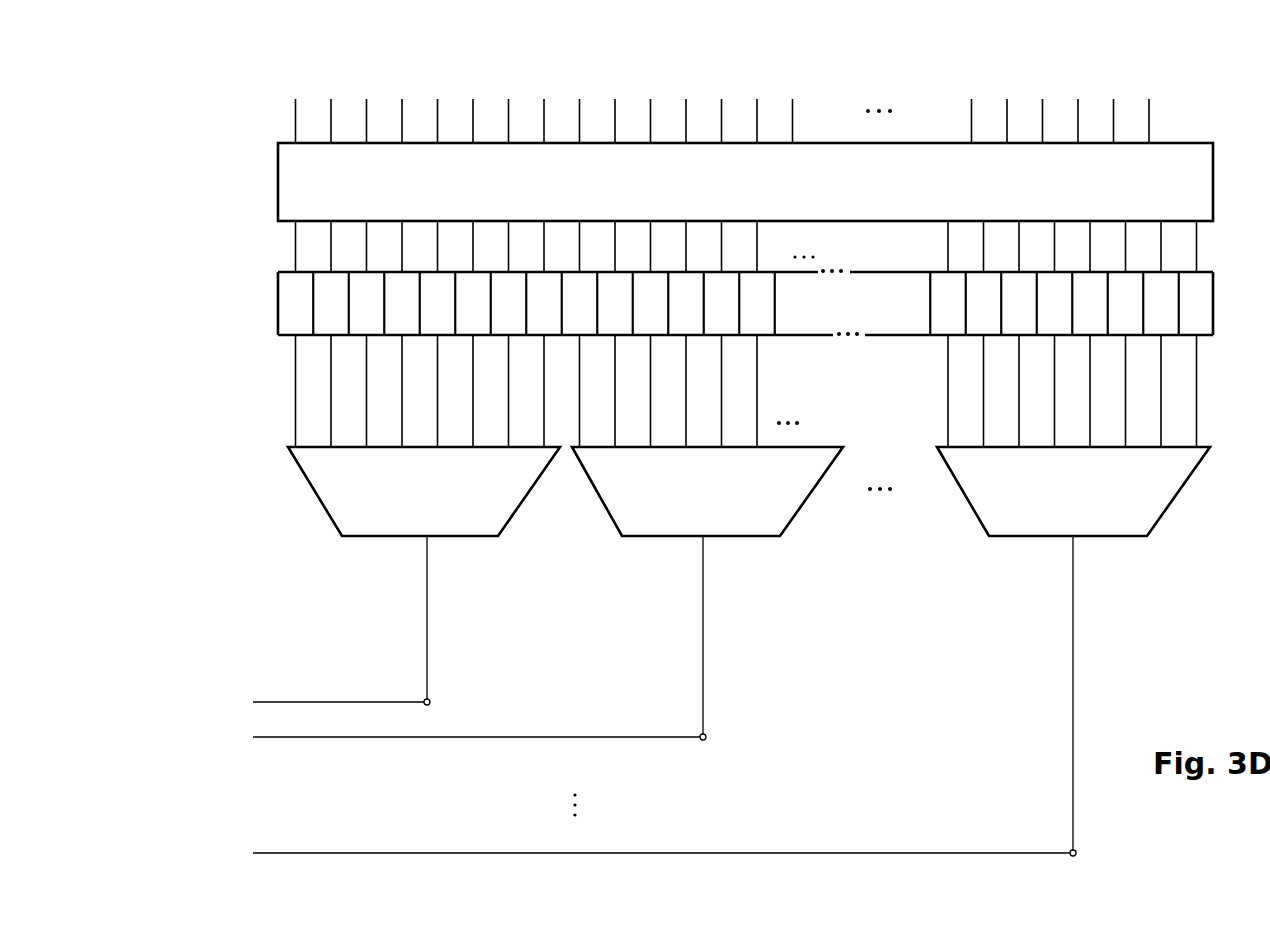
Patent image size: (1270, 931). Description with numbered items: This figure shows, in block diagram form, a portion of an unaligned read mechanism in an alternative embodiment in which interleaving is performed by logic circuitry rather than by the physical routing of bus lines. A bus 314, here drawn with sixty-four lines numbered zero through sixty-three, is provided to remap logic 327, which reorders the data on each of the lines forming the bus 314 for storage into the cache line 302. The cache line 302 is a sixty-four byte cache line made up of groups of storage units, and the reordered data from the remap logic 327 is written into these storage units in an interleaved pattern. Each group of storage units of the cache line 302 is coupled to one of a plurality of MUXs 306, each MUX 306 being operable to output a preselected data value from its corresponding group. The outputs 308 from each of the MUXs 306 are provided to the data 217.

The bus 314 is at (288, 62).
The remap logic 327 is at (278, 181).
The cache line 302 is at (1214, 298).
The MUX 306 is at (749, 435).
The output 308 is at (716, 694).
The data 217 is at (247, 853).